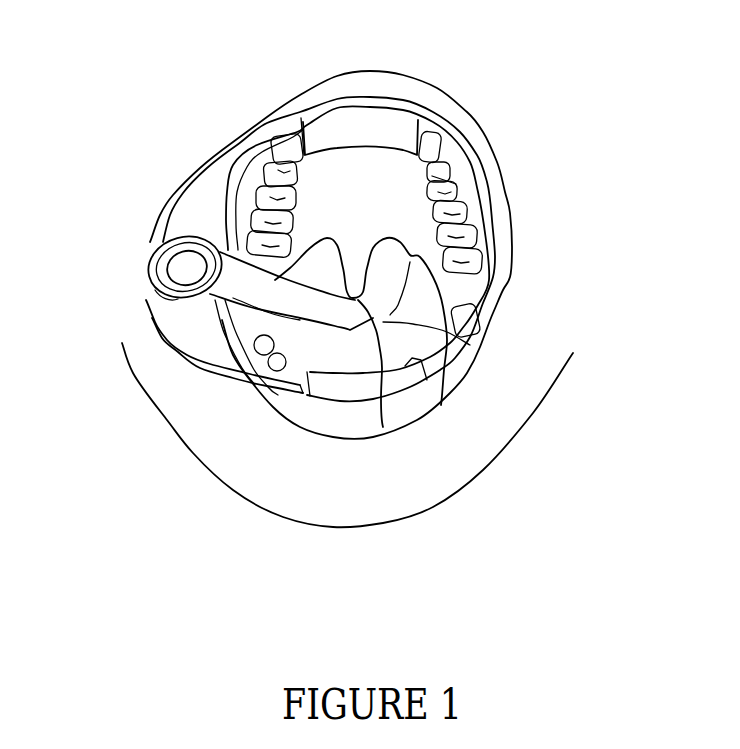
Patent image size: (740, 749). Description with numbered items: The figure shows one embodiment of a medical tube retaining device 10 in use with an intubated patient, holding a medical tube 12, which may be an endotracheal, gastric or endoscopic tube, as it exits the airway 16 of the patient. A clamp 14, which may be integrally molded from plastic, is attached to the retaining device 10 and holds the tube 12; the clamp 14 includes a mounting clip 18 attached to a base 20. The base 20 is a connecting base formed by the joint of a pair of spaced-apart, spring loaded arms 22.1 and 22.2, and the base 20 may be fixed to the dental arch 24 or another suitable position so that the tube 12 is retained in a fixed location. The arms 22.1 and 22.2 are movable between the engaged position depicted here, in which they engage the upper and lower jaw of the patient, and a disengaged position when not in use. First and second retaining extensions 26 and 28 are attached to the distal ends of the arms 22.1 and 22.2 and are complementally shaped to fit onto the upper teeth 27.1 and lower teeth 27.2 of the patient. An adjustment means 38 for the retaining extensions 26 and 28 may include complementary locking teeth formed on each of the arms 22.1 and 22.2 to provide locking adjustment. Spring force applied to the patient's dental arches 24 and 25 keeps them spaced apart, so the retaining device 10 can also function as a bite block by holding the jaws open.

The medical tube retaining device 10 is at (168, 139).
The medical tube 12 is at (383, 427).
The clamp 14 is at (200, 303).
The airway 16 is at (390, 313).
The mounting clip 18 is at (178, 295).
The base 20 is at (153, 265).
The first spring loaded arm 22.1 is at (228, 155).
The second spring loaded arm 22.2 is at (205, 375).
The dental arch 24 is at (468, 213).
The dental arch 25 is at (467, 372).
The first retaining extension 26 is at (370, 125).
The upper teeth 27.1 is at (478, 313).
The lower teeth 27.2 is at (470, 183).
The second retaining extension 28 is at (403, 382).
The adjustment means 38 is at (303, 155).